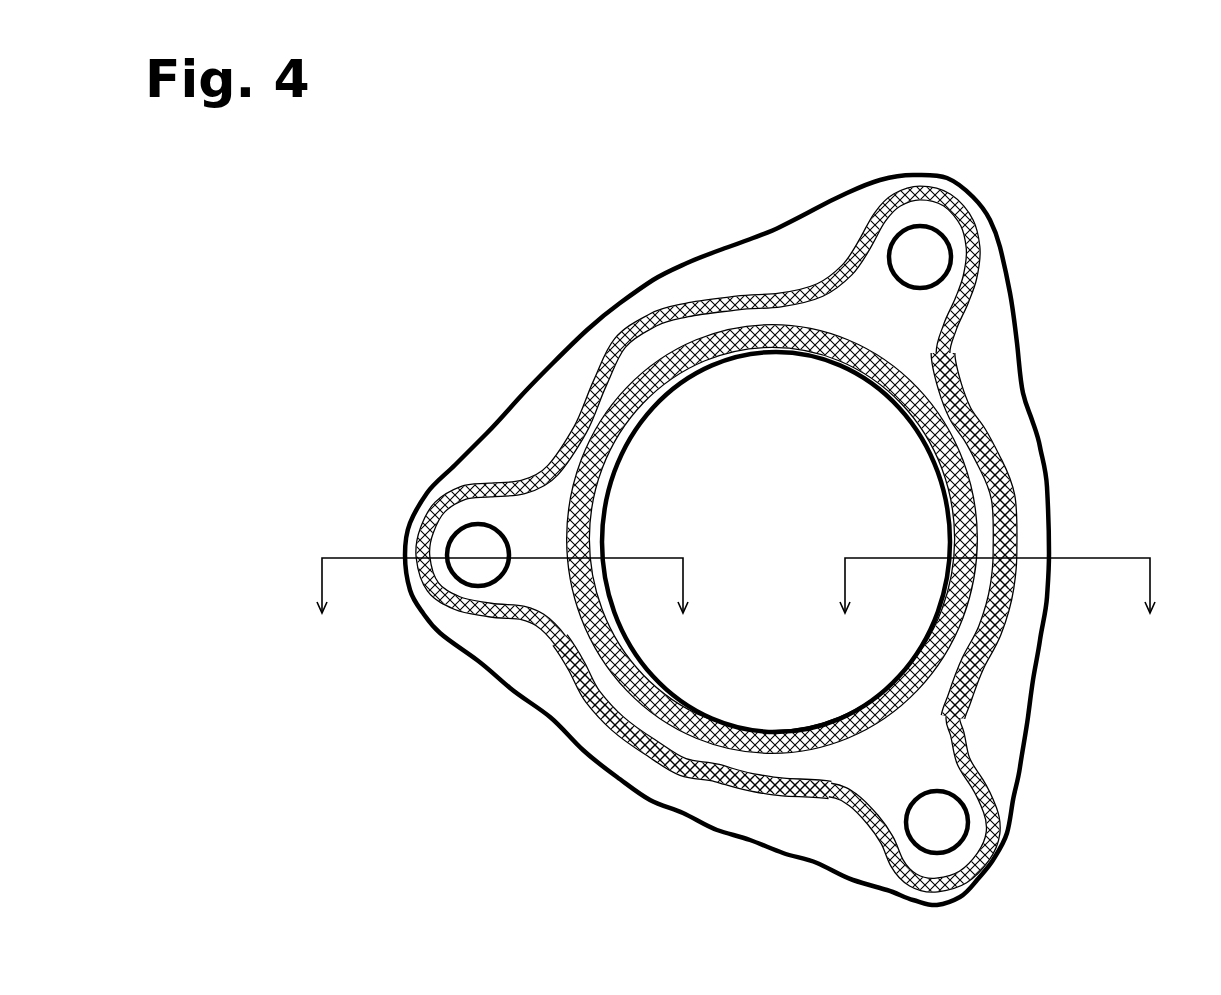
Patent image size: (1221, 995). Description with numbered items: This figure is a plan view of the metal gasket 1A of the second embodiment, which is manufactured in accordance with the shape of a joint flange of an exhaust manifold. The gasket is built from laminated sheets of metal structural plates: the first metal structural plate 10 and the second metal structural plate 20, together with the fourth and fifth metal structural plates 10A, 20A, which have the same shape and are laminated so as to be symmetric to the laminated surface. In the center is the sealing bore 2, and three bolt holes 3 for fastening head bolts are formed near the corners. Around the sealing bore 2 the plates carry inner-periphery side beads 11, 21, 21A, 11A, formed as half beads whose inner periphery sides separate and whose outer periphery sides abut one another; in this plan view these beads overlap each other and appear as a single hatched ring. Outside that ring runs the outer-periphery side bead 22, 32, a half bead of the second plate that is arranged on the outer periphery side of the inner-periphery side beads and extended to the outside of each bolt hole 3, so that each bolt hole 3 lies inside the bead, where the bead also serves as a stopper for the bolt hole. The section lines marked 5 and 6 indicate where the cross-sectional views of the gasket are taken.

The metal gasket 1A is at (733, 247).
The first metal structural plate 10 is at (698, 540).
The second metal structural plate 20 is at (698, 540).
The fifth metal structural plate 20A is at (698, 540).
The fourth metal structural plate 10A is at (528, 390).
The outer-periphery side bead 22 is at (714, 539).
The outer bead 32 is at (637, 337).
The inner-periphery side bead 11 is at (772, 539).
The inner-periphery side bead 21 is at (772, 539).
The inner-periphery side bead 21A is at (772, 539).
The inner-periphery side bead 11A is at (885, 362).
The sealing bore 2 is at (787, 569).
The bolt hole 3 is at (470, 547).
The section line 5- 5 is at (503, 607).
The section line 6- 6 is at (998, 607).